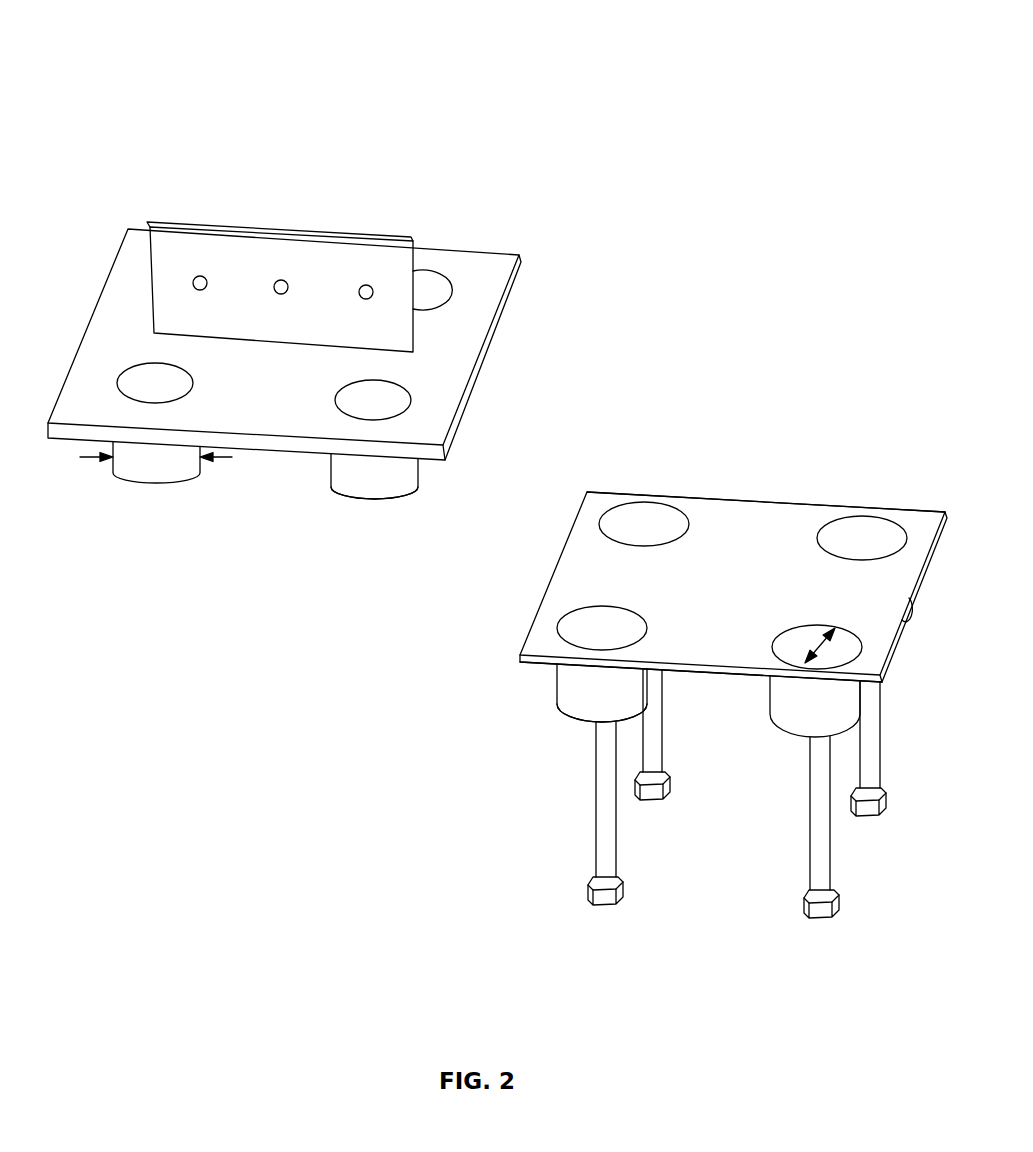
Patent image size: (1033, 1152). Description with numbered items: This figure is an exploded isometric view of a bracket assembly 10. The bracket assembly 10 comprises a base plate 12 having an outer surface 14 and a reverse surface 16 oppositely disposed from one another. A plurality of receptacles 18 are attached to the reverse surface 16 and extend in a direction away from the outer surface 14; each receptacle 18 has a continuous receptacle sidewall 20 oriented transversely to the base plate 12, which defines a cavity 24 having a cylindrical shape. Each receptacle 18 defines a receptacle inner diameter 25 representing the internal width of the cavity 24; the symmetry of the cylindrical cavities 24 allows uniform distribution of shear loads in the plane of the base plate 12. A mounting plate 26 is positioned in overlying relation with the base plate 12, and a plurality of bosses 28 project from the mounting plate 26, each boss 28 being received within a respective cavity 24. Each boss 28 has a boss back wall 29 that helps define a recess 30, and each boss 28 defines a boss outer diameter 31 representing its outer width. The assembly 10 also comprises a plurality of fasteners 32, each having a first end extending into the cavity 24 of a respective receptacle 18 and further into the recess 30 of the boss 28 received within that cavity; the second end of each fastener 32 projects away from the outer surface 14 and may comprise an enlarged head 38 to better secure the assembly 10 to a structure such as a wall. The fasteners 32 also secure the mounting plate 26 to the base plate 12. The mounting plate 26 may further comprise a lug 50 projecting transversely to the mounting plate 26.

The bracket assembly 10 is at (108, 42).
The base plate 12 is at (563, 578).
The outer surface 14 is at (722, 548).
The reverse surface 16 is at (716, 673).
The receptacles 18 is at (578, 686).
The receptacle sidewall 20 is at (592, 705).
The cavity 24 is at (641, 518).
The receptacle inner diameter 25 is at (822, 643).
The mounting plate 26 is at (450, 357).
The bosses 28 is at (155, 472).
The boss back wall 29 is at (347, 498).
The recess 30 is at (153, 380).
The boss outer diameter 31 is at (232, 457).
The fasteners 32 is at (811, 822).
The enlarged head 38 is at (827, 920).
The lug 50 is at (272, 250).